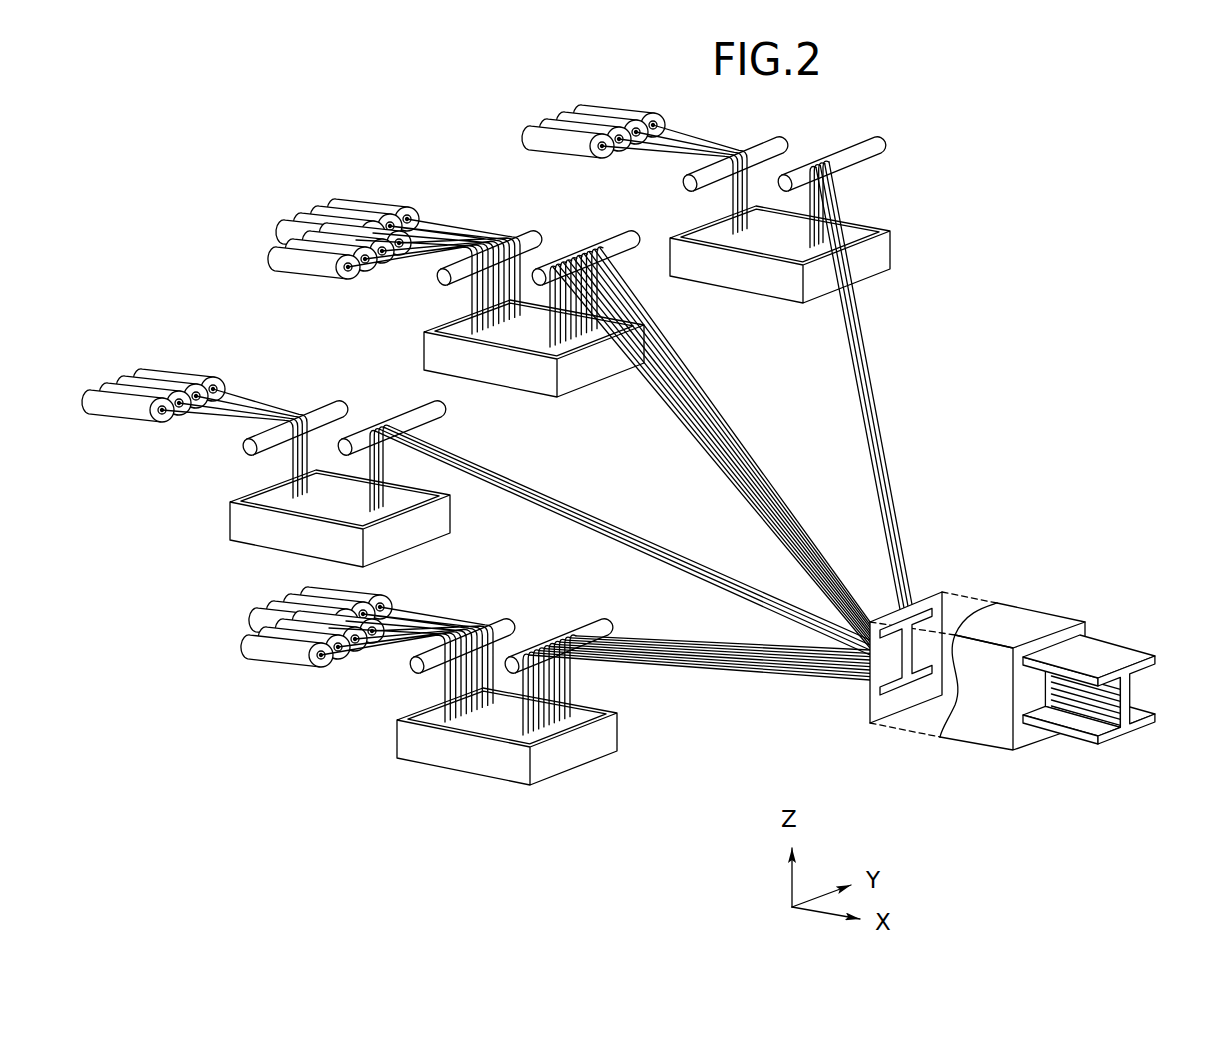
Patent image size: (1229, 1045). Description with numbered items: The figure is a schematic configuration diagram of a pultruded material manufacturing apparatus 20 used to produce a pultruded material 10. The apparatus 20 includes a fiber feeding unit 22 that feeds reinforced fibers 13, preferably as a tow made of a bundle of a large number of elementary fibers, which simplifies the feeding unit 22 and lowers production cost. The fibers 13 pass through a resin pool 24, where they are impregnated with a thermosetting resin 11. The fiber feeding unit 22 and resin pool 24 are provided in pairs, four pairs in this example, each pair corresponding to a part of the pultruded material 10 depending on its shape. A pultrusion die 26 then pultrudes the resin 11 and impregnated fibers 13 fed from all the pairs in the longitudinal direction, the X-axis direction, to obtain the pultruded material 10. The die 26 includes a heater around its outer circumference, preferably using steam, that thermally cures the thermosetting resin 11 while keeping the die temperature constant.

The pultruded material 10 is at (1123, 629).
The thermosetting resin 11 is at (507, 767).
The reinforced fibers 13 is at (448, 650).
The pultruded material manufacturing apparatus 20 is at (1029, 224).
The fiber feeding unit 22 is at (298, 670).
The resin pool 24 is at (482, 771).
The pultrusion die 26 is at (932, 746).